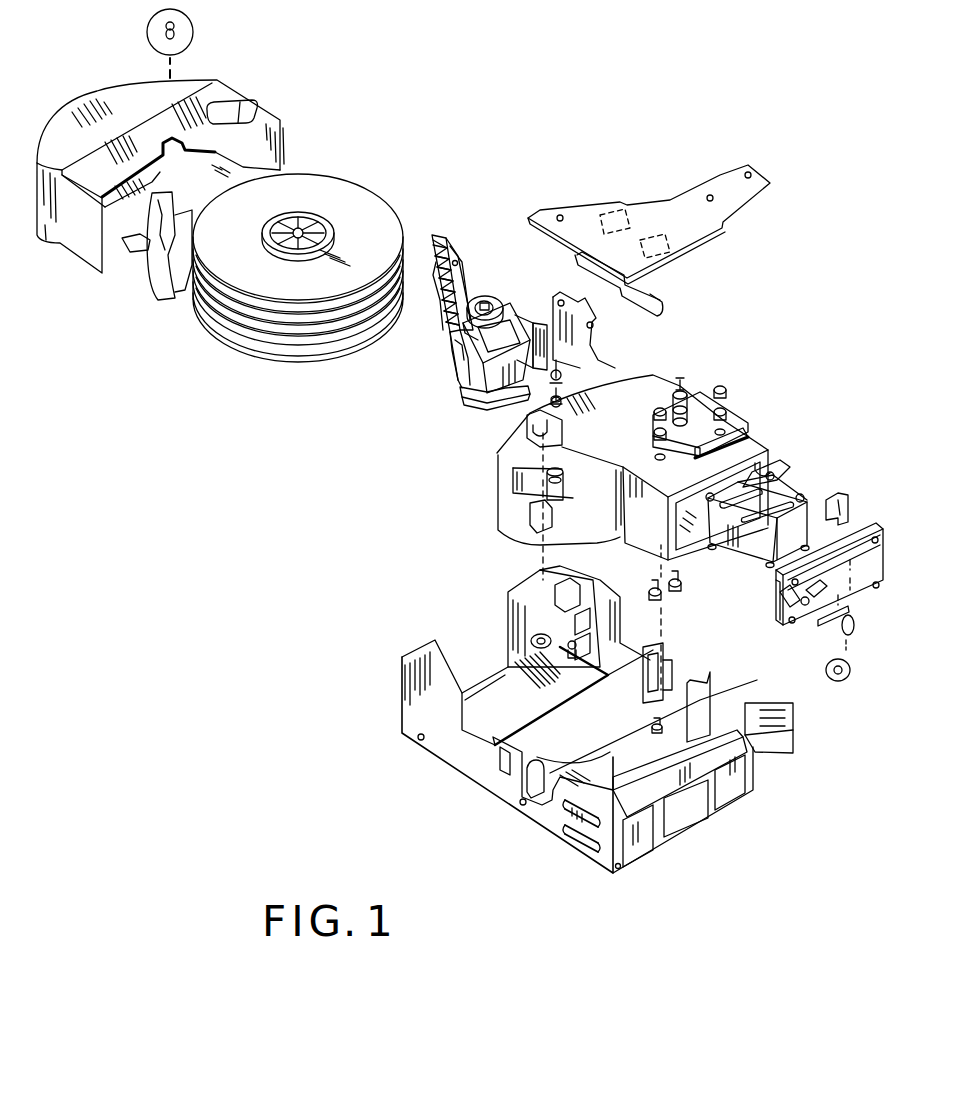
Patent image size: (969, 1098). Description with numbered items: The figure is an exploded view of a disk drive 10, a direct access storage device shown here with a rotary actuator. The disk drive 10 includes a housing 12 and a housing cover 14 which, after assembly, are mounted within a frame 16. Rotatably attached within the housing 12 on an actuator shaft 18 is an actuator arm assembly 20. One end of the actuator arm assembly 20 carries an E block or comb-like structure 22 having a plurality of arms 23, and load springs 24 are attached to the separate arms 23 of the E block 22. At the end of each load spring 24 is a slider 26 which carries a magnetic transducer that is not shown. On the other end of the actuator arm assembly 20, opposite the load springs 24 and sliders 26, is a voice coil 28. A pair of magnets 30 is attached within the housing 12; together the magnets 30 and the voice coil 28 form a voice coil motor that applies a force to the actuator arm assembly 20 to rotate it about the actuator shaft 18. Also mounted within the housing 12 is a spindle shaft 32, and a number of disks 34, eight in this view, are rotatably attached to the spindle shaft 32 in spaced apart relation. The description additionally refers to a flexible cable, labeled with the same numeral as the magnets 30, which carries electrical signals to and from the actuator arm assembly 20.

The disk drive 10 is at (456, 161).
The housing 12 is at (660, 383).
The housing cover 14 is at (83, 243).
The frame 16 is at (463, 763).
The actuator shaft 18 is at (485, 305).
The actuator arm assembly 20 is at (450, 366).
The E block 22 is at (438, 307).
The arms 23 is at (470, 282).
The load springs 24 is at (462, 233).
The slider 26 is at (437, 232).
The voice coil 28 is at (503, 405).
The pair of magnets 30 is at (783, 490).
The spindle shaft 32 is at (300, 226).
The disks 34 is at (258, 342).